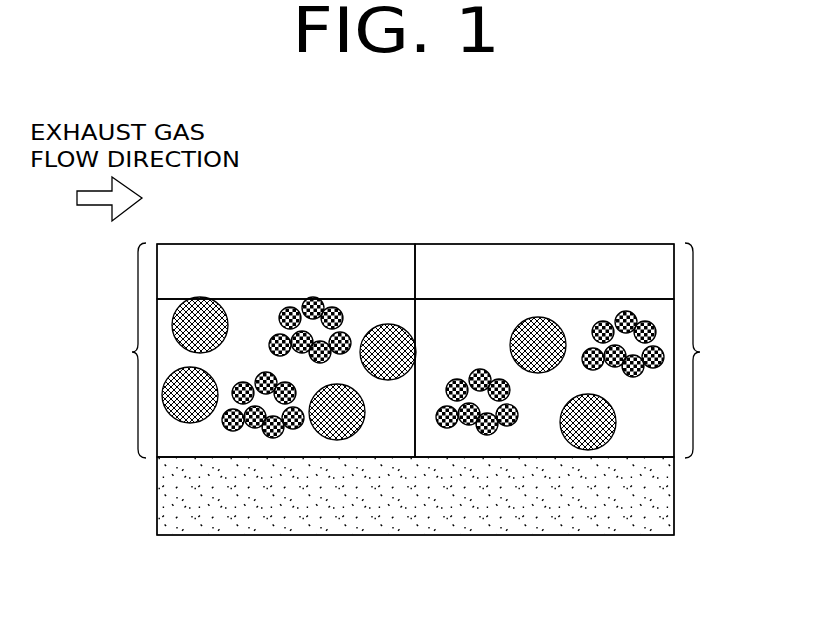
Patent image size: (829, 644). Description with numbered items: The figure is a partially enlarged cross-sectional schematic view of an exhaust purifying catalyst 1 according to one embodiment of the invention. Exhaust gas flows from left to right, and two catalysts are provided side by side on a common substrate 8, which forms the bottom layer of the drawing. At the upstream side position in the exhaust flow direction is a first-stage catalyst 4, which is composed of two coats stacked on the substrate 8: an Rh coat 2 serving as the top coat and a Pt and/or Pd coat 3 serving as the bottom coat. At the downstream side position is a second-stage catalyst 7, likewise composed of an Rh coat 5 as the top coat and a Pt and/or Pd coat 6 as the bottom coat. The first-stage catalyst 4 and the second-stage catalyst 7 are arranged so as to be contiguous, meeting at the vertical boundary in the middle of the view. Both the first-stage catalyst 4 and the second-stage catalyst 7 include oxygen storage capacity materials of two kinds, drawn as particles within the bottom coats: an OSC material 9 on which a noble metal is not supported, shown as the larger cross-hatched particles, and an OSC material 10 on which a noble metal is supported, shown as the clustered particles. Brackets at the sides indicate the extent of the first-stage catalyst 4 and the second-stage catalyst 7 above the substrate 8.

The exhaust purifying catalyst 1 is at (424, 242).
The Rh coat 2 is at (199, 273).
The Pt and/or Pd coat 3 is at (177, 437).
The first-stage catalyst 4 is at (128, 350).
The Rh coat 5 is at (494, 277).
The Pt and/or Pd coat 6 is at (652, 435).
The second-stage catalyst 7 is at (705, 350).
The substrate 8 is at (408, 505).
The OSC material on which a noble metal is not supported 9 is at (385, 323).
The OSC material on which a noble metal is supported 10 is at (311, 297).